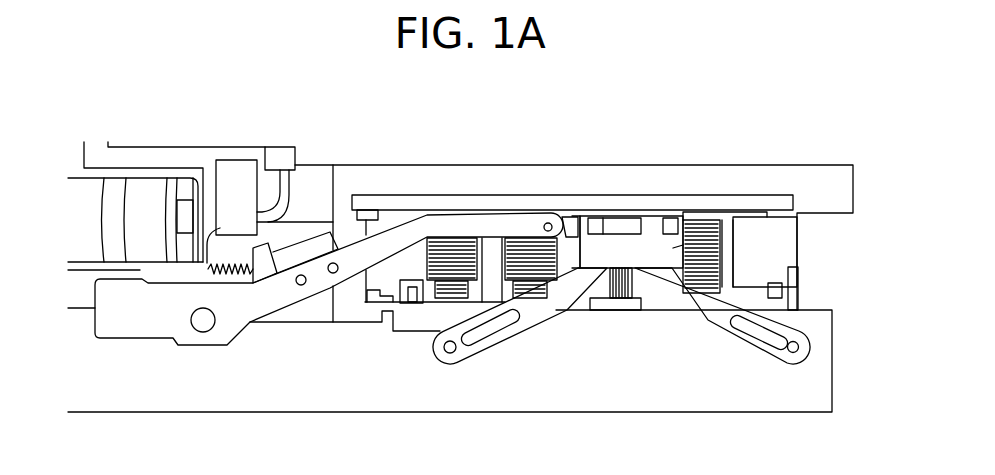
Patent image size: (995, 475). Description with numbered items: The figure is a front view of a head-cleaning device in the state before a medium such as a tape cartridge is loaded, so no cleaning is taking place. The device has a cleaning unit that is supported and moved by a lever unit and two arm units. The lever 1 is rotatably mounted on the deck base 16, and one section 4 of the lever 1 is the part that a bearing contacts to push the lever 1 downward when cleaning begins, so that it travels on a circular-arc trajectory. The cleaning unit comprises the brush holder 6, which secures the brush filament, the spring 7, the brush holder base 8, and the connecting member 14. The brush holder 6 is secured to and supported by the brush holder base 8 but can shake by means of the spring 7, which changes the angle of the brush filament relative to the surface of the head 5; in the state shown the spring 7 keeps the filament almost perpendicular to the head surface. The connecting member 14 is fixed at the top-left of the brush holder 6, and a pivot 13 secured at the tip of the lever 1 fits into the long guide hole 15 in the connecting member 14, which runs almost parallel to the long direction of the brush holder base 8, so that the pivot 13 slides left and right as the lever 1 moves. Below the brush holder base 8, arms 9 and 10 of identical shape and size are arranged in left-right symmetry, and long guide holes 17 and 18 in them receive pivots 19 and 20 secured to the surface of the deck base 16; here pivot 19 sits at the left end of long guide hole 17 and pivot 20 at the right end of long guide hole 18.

The lever 1 is at (265, 302).
The one section of the lever 4 is at (262, 263).
The head 5 is at (628, 311).
The brush holder 6 is at (623, 227).
The spring 7 is at (667, 227).
The brush holder base 8 is at (717, 246).
The arm 9 is at (543, 317).
The arm 10 is at (707, 318).
The pivot 13 is at (544, 220).
The connecting member 14 is at (563, 225).
The long guide hole 15 is at (574, 216).
The deck base 16 is at (818, 317).
The long guide hole 17 is at (507, 330).
The long guide hole 18 is at (743, 328).
The pivot 19 is at (452, 362).
The pivot 20 is at (792, 364).